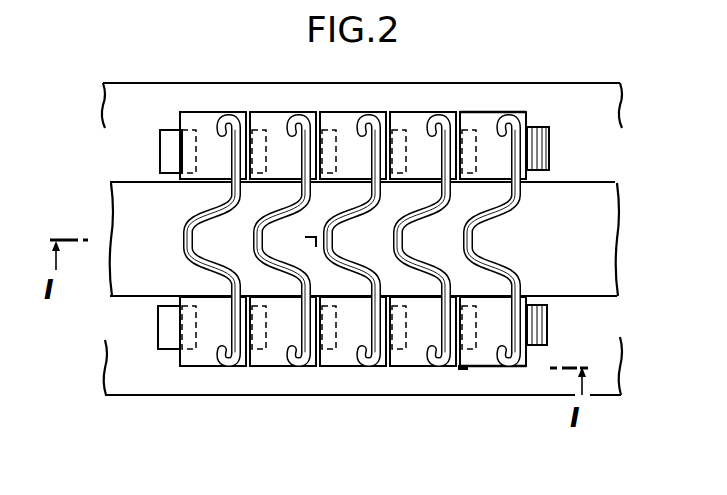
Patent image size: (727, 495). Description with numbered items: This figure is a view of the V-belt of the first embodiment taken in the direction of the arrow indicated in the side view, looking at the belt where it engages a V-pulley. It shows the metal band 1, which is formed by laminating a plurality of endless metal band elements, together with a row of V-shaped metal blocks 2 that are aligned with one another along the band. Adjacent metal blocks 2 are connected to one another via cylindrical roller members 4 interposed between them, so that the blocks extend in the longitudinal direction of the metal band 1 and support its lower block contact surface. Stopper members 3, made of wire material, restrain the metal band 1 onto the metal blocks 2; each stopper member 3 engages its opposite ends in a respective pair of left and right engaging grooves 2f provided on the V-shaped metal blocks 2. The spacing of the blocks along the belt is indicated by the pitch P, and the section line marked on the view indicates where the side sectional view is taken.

The metal band 1 is at (135, 290).
The V-shaped metal block 2 is at (200, 122).
The engaging groove 2f is at (481, 113).
The stopper member 3 is at (516, 197).
The cylindrical roller member 4 is at (160, 151).
The pitch P is at (225, 387).